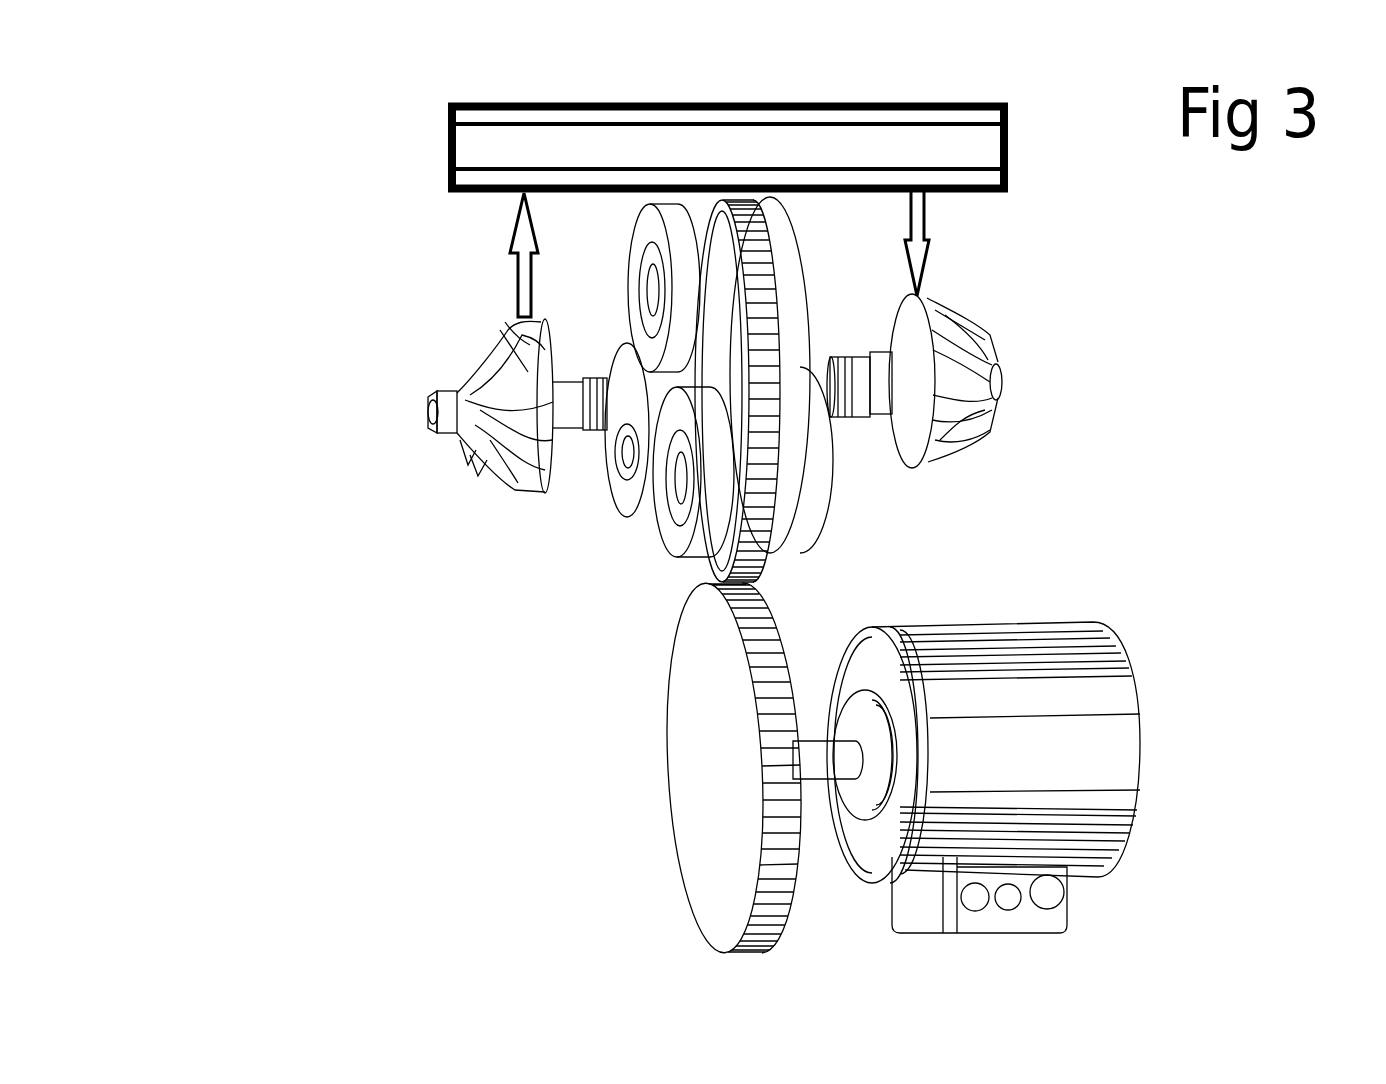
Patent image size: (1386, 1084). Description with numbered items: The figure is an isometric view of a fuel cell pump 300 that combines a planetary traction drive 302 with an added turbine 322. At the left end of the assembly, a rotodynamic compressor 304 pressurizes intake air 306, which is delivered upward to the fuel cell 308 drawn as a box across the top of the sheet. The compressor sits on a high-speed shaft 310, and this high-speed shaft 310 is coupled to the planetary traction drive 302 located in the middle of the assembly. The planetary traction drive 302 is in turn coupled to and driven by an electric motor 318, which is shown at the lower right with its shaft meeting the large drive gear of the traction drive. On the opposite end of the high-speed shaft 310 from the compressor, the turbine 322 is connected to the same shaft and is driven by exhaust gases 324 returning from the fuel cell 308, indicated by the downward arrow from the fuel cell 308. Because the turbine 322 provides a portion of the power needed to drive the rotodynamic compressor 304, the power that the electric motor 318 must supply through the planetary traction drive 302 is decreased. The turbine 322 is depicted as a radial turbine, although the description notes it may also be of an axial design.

The fuel cell pump 300 is at (330, 190).
The planetary traction drive 302 is at (590, 504).
The rotodynamic compressor 304 is at (457, 430).
The intake air 306 is at (520, 226).
The fuel cell 308 is at (647, 147).
The high-speed shaft 310 is at (580, 403).
The electric motor 318 is at (1067, 778).
The turbine 322 is at (973, 410).
The exhaust gases 324 is at (917, 257).